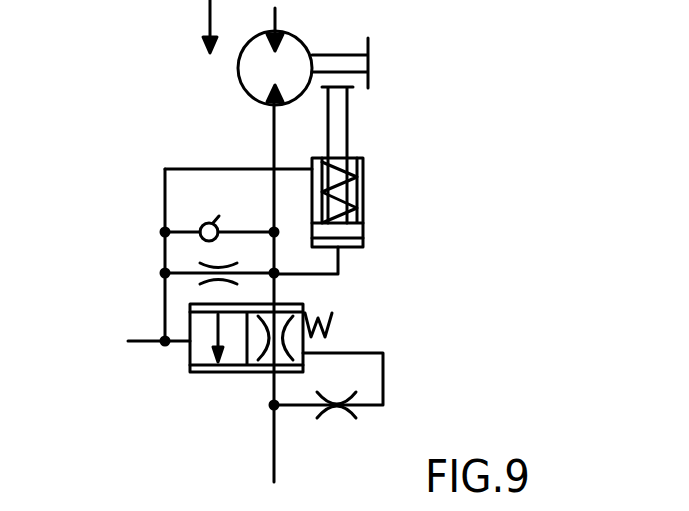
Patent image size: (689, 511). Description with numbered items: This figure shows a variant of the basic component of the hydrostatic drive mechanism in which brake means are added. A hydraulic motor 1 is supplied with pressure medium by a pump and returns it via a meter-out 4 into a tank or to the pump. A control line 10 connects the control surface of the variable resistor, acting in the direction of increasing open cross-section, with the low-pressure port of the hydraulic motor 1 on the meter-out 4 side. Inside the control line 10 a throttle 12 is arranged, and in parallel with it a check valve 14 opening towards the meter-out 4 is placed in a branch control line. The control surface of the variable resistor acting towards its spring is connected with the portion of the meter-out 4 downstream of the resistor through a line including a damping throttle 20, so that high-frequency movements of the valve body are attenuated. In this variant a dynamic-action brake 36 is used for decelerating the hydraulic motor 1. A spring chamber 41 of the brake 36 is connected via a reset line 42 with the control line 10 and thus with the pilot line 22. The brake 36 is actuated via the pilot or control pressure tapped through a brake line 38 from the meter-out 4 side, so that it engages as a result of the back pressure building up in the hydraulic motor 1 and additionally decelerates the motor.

The hydraulic motor 1 is at (234, 70).
The meter-out 4 is at (280, 291).
The control line 10 is at (165, 303).
The throttle 12 is at (205, 263).
The check valve 14 is at (205, 222).
The damping throttle 20 is at (337, 410).
The pilot line 22 is at (145, 342).
The dynamic-action brake 36 is at (363, 198).
The return line 38 is at (338, 277).
The spring chamber 41 is at (357, 170).
The reset line 42 is at (165, 192).